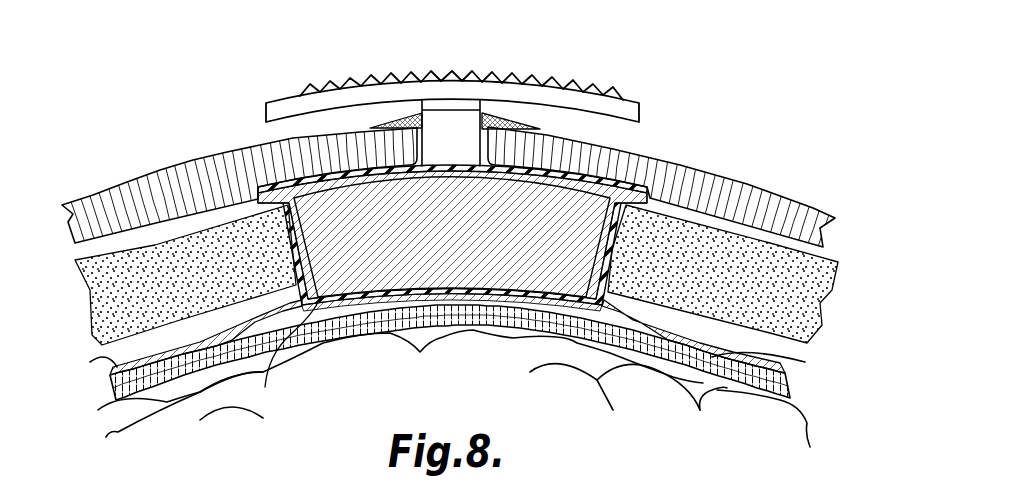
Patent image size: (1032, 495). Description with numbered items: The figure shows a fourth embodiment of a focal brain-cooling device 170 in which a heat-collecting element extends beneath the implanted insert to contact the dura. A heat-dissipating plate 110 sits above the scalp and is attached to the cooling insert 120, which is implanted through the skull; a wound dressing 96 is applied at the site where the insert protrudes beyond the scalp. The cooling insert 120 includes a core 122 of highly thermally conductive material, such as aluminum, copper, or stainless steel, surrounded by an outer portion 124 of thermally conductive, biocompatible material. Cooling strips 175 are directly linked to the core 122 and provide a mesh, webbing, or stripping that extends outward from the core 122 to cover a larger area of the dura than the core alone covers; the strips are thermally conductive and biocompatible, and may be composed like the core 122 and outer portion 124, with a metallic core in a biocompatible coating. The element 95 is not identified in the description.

The brain-cooling device 170 is at (498, 70).
The heat-dissipating plate 110 is at (655, 100).
The wound dressing 96 is at (497, 121).
The core 122 is at (462, 243).
The cooling insert 120 is at (452, 295).
The outer portion 124 is at (296, 278).
The cooling strips 175 is at (113, 368).
The base strap 95 is at (790, 392).